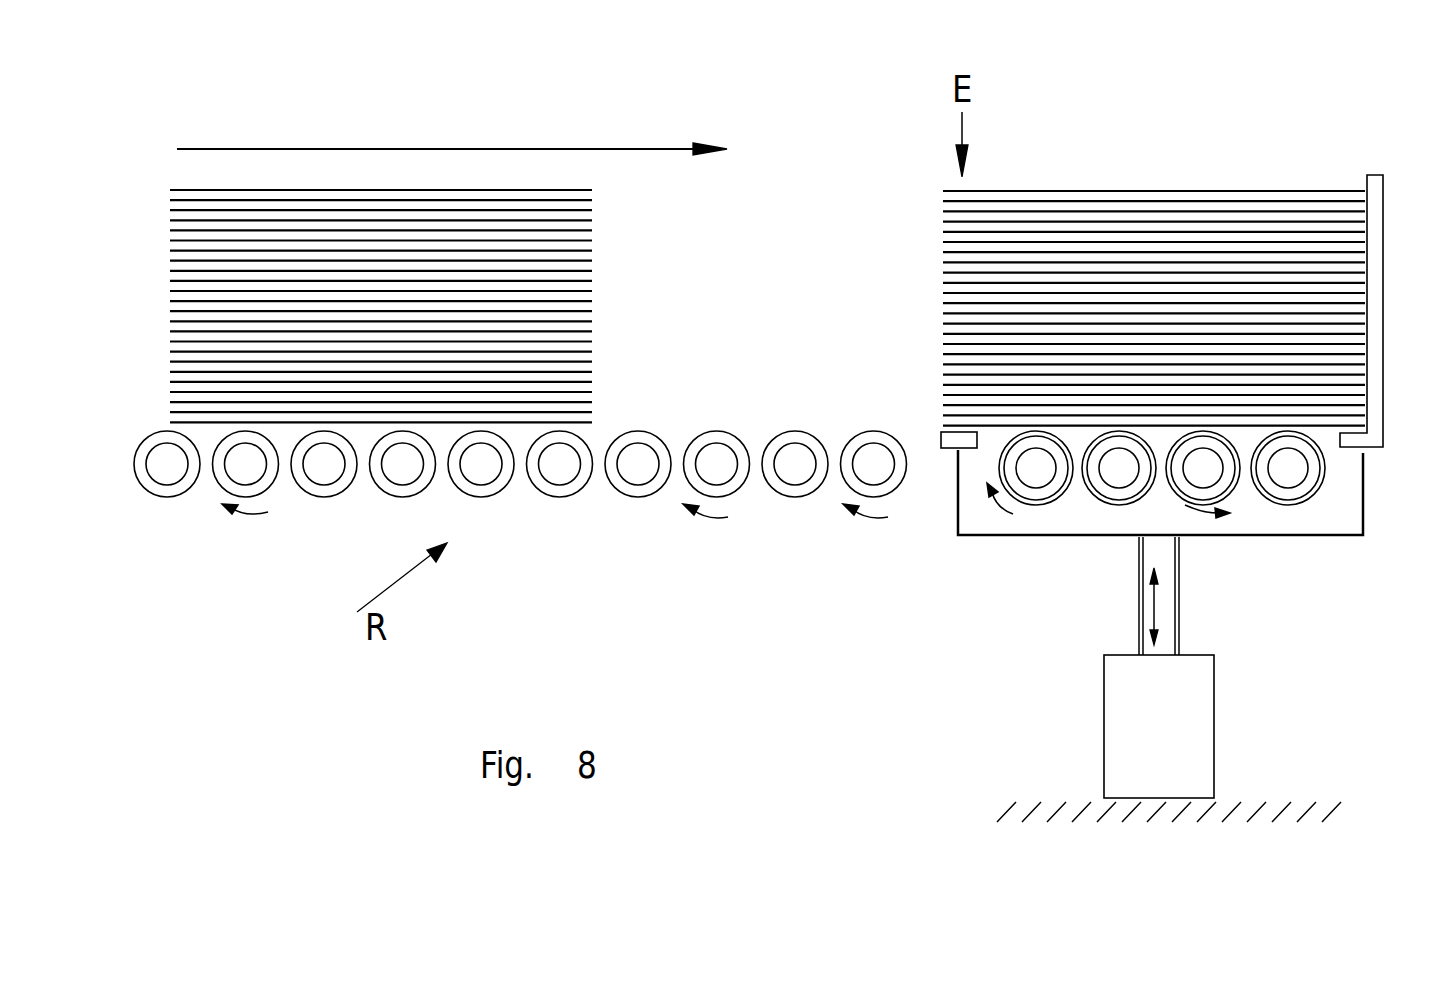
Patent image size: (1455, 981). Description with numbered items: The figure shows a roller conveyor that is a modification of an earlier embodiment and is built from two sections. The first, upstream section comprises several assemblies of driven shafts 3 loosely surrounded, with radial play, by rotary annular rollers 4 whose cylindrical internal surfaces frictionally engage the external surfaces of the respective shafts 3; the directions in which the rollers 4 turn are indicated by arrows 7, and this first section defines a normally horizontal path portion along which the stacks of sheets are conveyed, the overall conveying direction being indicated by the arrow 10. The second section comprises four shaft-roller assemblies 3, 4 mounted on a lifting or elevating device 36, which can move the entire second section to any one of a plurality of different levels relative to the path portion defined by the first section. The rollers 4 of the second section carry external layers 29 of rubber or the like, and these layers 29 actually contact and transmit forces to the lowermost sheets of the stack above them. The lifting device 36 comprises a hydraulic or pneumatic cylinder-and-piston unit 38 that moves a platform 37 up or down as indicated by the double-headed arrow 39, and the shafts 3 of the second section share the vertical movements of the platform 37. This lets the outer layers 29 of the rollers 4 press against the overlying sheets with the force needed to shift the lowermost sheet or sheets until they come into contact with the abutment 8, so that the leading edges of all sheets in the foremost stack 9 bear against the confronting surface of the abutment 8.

The shaft 3 is at (158, 468).
The roller 4 is at (172, 497).
The arrow 7 is at (735, 526).
The abutment 8 is at (1384, 212).
The foremost stack 9 is at (1094, 192).
The conveying direction arrow 10 is at (452, 125).
The external layer 29 is at (1005, 447).
The lifting or elevating device 36 is at (1255, 620).
The platform 37 is at (1112, 540).
The cylinder-and-piston unit 38 is at (1214, 720).
The double-headed arrow 39 is at (1157, 608).